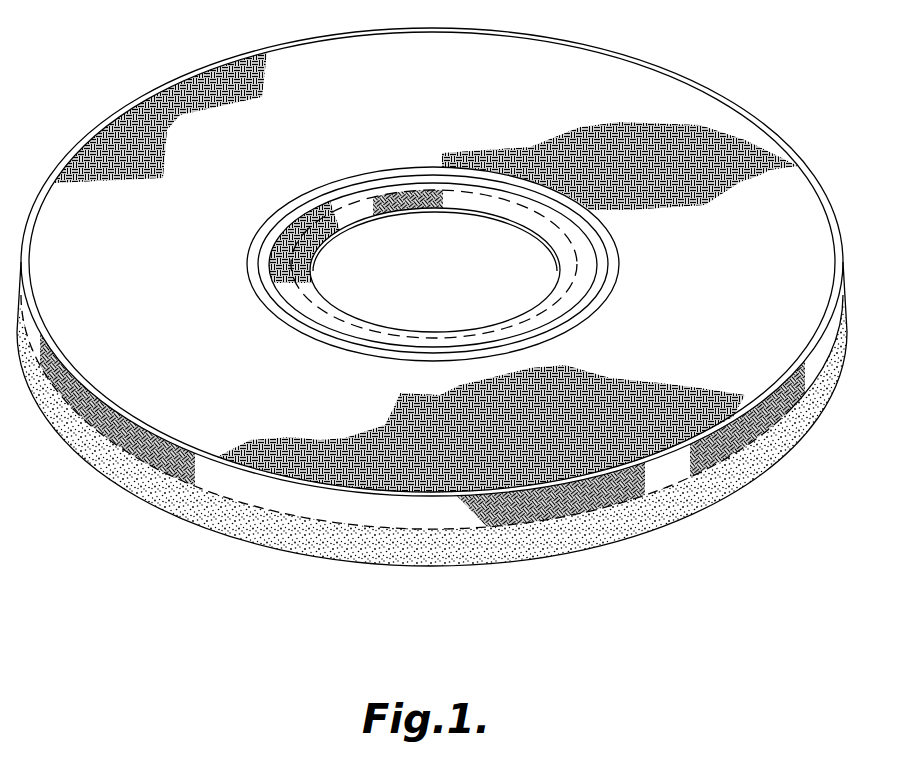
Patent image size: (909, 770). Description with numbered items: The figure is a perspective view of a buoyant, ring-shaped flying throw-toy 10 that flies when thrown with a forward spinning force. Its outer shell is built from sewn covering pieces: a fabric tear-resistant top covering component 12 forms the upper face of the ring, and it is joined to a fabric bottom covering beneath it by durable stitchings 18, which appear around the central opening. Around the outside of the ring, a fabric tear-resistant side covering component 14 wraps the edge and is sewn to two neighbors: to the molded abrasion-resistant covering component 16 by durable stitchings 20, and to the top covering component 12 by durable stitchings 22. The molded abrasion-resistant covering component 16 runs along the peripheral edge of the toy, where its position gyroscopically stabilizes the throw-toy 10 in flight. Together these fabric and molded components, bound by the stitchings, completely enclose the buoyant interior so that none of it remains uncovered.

The ring-shaped throw-toy 10 is at (146, 84).
The fabric tear-resistant top covering component 12 is at (705, 126).
The fabric tear-resistant side covering component 14 is at (107, 432).
The molded abrasion-resistant covering component 16 is at (252, 545).
The durable stitchings 18 is at (532, 209).
The durable stitchings 20 is at (800, 404).
The durable stitchings 22 is at (834, 220).